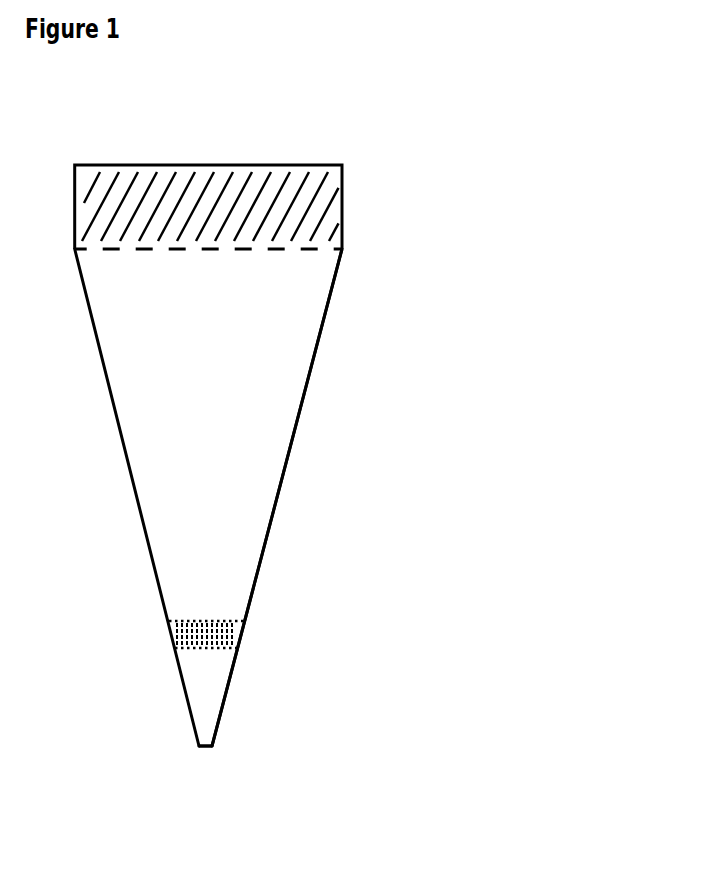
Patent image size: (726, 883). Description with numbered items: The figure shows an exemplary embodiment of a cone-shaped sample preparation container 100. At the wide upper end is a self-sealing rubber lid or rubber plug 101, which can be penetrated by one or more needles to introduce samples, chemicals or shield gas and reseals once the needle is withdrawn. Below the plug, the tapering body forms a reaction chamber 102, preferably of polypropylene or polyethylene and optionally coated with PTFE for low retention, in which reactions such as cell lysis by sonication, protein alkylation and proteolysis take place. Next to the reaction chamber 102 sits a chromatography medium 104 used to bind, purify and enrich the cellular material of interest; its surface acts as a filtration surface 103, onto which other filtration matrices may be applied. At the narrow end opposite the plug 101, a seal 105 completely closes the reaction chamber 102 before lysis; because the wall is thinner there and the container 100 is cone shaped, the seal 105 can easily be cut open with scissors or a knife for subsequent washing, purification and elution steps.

The sample preparation container 100 is at (337, 417).
The self-sealing rubber lid or rubber plug 101 is at (333, 195).
The reaction chamber 102 is at (242, 590).
The filtration surface 103 is at (173, 622).
The chromatography medium 104 is at (237, 637).
The seal 105 is at (215, 745).